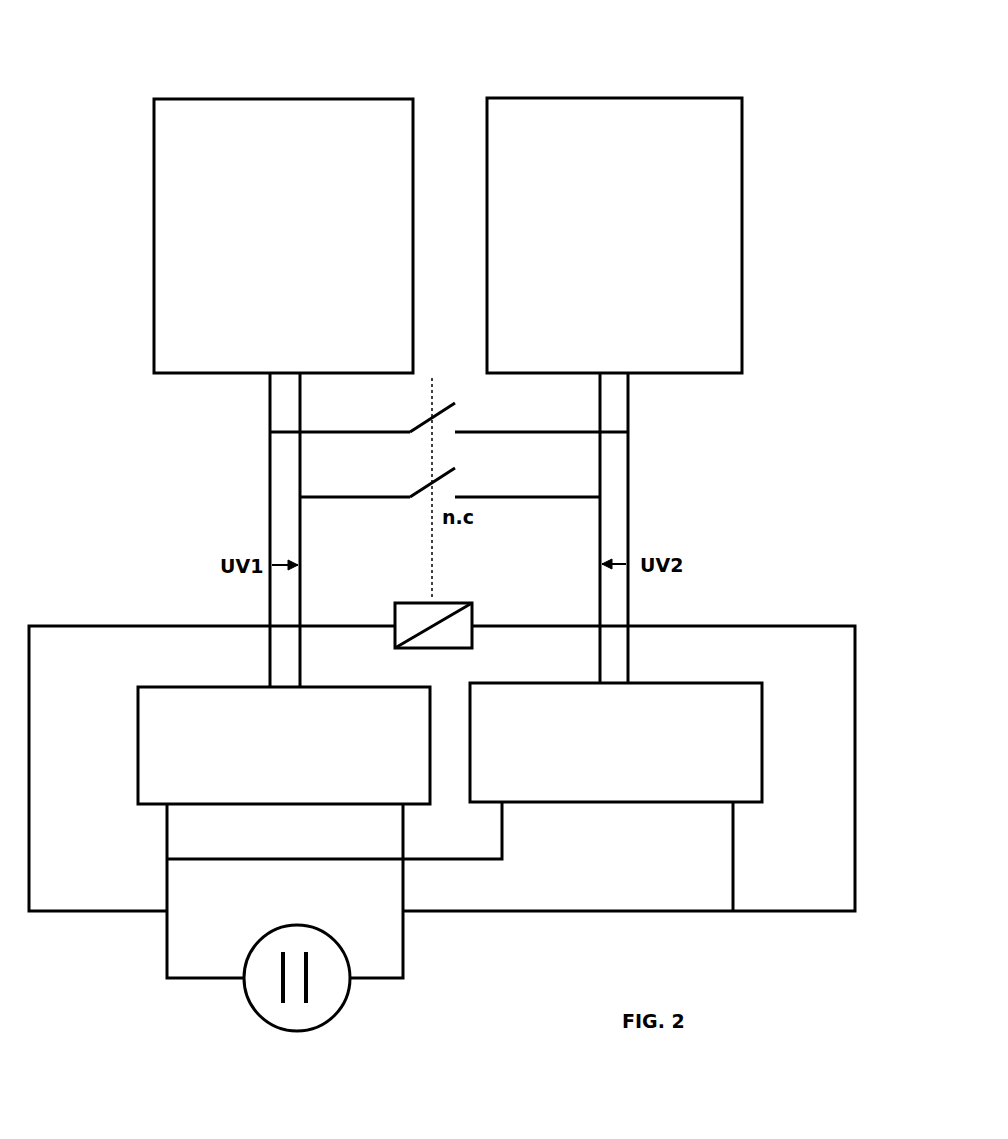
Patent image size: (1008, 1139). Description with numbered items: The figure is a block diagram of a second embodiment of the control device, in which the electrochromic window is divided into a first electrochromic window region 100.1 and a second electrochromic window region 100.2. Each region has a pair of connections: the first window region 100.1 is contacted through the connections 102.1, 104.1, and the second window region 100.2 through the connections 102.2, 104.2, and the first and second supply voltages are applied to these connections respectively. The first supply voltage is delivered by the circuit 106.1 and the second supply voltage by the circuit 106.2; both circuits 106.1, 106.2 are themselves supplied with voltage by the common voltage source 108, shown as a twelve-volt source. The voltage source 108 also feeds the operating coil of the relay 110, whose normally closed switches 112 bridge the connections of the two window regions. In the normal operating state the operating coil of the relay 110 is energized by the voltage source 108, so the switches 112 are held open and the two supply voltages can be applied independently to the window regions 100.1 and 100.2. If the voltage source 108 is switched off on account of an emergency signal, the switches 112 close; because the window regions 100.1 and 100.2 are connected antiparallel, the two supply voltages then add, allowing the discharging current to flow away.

The first electrochromic window region 100.1 is at (208, 99).
The second electrochromic window region 100.2 is at (568, 98).
The connection 102.1 is at (300, 408).
The connection 104.1 is at (270, 408).
The connection 102.2 is at (628, 405).
The connection 104.2 is at (600, 405).
The circuit 106.1 is at (138, 740).
The circuit 106.2 is at (762, 740).
The voltage source 108 is at (313, 1030).
The relay 110 is at (412, 603).
The switch 112 is at (428, 488).